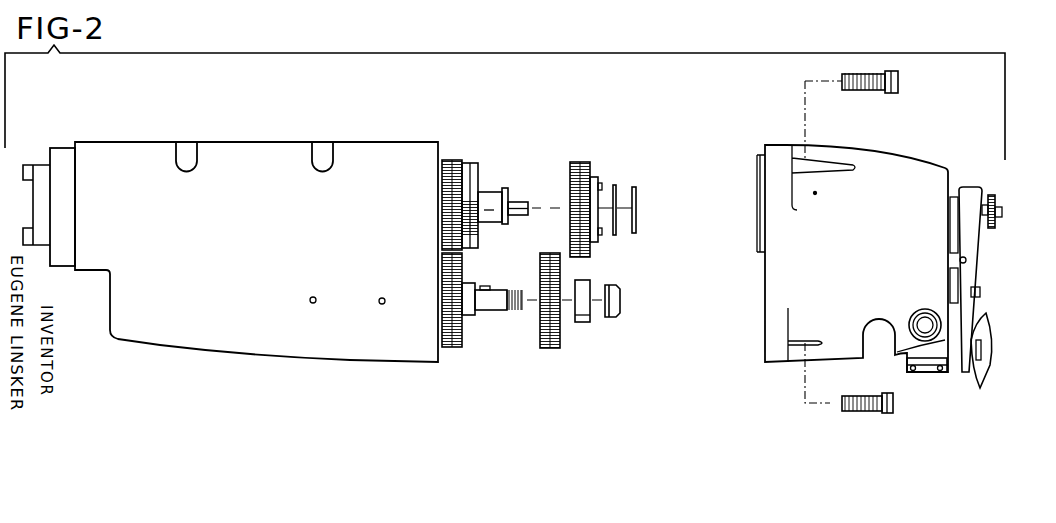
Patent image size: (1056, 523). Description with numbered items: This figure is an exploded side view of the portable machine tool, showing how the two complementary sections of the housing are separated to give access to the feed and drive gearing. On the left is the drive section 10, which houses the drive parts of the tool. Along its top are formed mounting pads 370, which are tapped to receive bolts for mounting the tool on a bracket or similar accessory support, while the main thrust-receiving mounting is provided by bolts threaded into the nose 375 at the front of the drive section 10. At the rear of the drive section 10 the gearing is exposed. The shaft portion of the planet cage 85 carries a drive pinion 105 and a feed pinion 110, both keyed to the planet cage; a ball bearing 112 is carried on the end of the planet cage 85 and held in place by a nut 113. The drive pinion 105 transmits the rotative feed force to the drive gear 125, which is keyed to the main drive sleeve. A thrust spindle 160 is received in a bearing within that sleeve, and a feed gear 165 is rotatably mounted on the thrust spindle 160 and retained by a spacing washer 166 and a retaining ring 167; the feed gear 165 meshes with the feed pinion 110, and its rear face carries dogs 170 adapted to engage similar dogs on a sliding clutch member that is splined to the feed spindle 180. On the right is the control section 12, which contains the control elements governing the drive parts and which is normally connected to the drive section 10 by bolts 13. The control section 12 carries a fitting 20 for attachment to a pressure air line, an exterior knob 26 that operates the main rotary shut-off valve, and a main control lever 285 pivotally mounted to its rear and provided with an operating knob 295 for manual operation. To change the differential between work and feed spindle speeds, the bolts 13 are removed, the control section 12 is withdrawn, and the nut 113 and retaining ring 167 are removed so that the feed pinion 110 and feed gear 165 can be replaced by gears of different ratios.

The drive section 10 is at (262, 138).
The nose 375 is at (60, 152).
The mounting pads 370 is at (182, 150).
The drive gear 125 is at (450, 160).
The thrust spindle 160 is at (490, 192).
The feed spindle 180 is at (519, 202).
The feed gear 165 is at (577, 162).
The spacing washer 166 is at (614, 185).
The retaining ring 167 is at (636, 190).
The dogs 170 is at (600, 233).
The drive pinion 105 is at (453, 347).
The planet cage 85 is at (488, 310).
The feed pinion 110 is at (550, 348).
The ball bearing 112 is at (581, 322).
The nut 113 is at (612, 315).
The control section 12 is at (901, 168).
The bolts 13 is at (898, 82).
The knob 26 is at (922, 316).
The fitting 20 is at (932, 372).
The main control lever 285 is at (966, 242).
The operating knob 295 is at (988, 362).